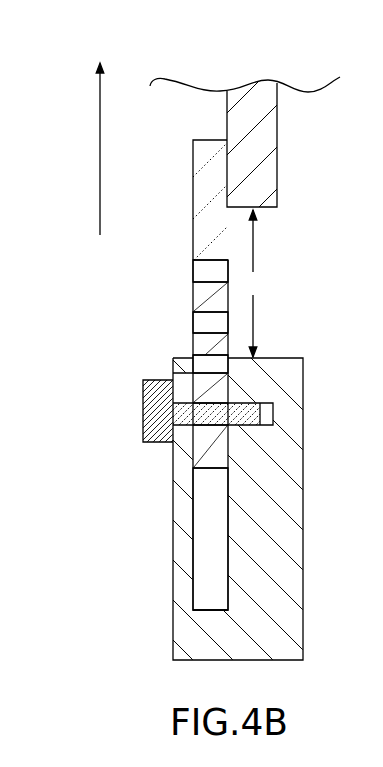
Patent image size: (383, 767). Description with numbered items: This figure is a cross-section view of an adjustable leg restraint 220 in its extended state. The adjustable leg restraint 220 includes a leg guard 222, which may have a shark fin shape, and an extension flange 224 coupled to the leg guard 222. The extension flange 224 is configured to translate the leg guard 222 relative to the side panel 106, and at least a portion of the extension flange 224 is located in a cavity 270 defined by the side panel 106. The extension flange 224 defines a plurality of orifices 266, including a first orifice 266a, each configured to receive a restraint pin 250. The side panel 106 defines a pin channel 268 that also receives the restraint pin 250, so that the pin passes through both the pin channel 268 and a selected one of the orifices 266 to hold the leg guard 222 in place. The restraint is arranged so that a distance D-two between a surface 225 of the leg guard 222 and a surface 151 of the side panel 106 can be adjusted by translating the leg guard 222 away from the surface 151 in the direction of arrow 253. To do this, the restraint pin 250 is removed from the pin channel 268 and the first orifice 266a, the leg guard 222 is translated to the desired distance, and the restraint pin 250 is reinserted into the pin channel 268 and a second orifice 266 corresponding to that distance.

The adjustable leg restraint 220 is at (118, 98).
The leg guard 222 is at (267, 134).
The extension flange 224 is at (203, 200).
The surface 225 is at (268, 210).
The arrow 253 is at (101, 163).
The orifice 266a is at (198, 270).
The orifices 266 is at (198, 360).
The surface 151 is at (238, 479).
The side panel 106 is at (273, 550).
The restraint pin 250 is at (143, 390).
The pin channel 268 is at (275, 414).
The cavity 270 is at (205, 539).